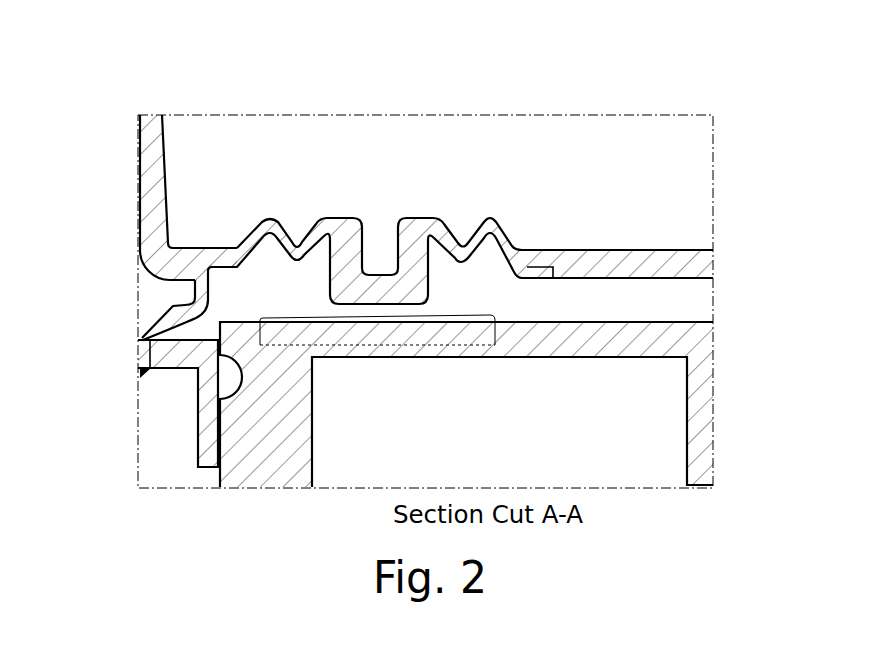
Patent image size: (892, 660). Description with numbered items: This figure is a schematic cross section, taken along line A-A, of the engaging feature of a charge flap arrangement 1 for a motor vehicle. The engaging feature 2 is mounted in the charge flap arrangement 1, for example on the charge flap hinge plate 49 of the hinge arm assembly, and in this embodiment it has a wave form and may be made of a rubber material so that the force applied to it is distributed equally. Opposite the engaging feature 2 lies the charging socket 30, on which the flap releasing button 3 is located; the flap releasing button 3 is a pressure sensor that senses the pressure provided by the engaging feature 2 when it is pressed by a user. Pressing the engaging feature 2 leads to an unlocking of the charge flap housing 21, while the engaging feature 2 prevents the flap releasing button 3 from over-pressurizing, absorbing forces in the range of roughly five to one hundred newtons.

The charge flap arrangement 1 is at (284, 110).
The engaging feature 2 is at (424, 219).
The charge flap hinge plate 49 is at (672, 255).
The flap releasing button 3 is at (470, 328).
The charging socket 30 is at (285, 412).
The charge flap housing 21 is at (203, 355).